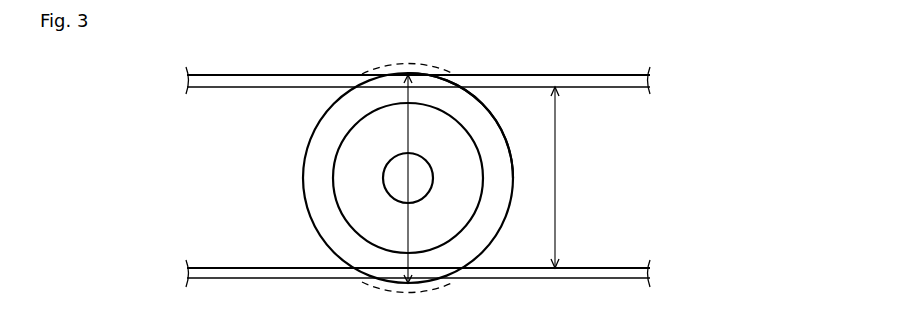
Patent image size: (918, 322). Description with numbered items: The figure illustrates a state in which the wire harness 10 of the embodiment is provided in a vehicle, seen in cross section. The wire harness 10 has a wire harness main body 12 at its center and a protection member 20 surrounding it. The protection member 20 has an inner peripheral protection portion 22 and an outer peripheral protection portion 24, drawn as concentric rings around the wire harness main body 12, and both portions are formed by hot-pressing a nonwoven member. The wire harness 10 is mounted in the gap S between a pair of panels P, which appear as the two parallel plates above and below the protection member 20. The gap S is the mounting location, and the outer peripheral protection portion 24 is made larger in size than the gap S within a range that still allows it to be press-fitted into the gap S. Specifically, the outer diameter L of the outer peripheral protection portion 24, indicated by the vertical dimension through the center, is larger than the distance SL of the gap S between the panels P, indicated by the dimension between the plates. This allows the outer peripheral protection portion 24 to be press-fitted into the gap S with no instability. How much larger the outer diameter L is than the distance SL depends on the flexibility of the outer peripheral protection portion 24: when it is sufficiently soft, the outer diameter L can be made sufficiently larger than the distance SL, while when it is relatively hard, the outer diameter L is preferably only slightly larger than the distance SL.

The wire harness 10 is at (388, 177).
The wire harness main body 12 is at (383, 184).
The protection member 20 is at (313, 128).
The inner peripheral protection portion 22 is at (483, 157).
The outer peripheral protection portion 24 is at (499, 123).
The panel P is at (583, 74).
The outer diameter L is at (408, 122).
The gap S is at (611, 170).
The distance SL is at (557, 209).